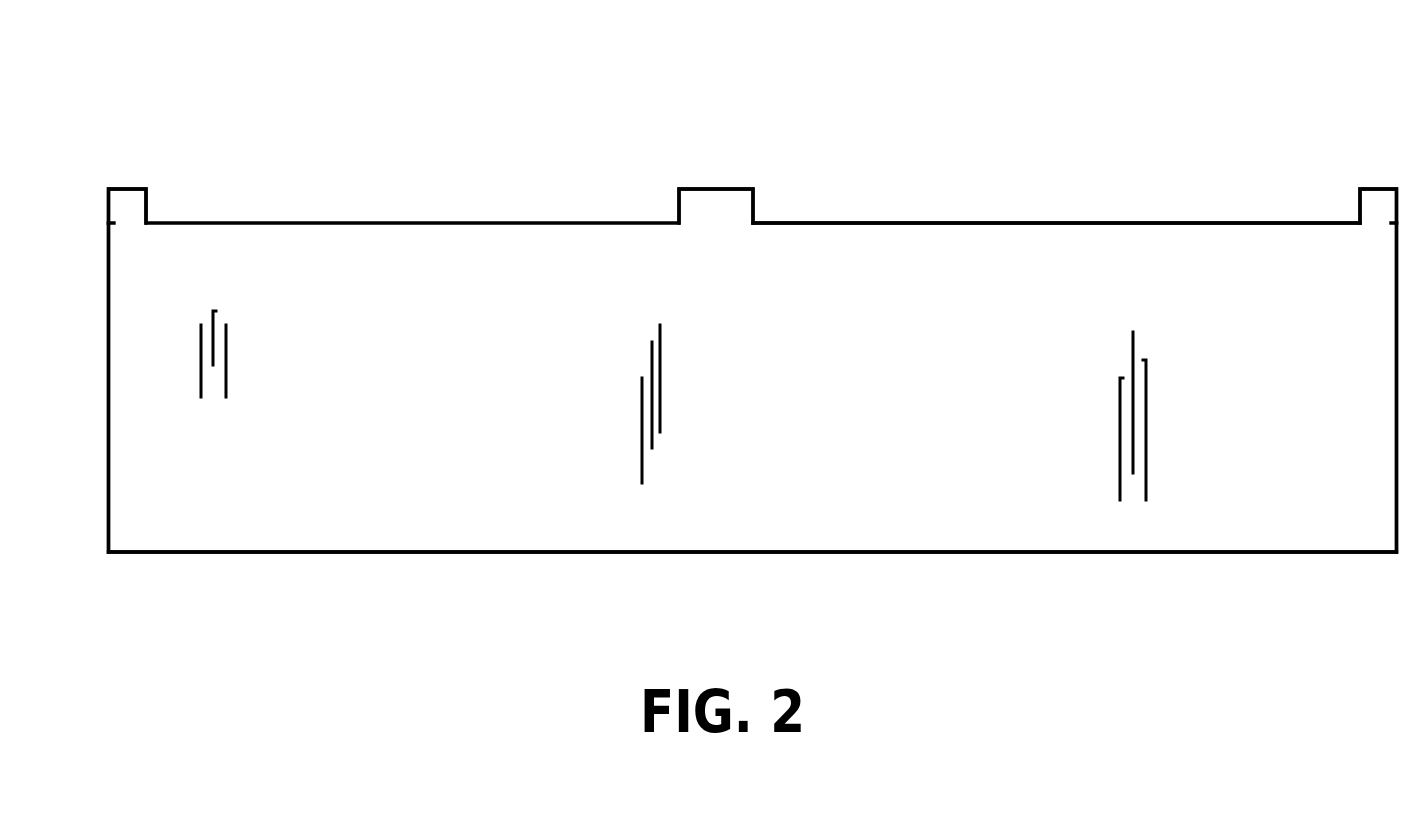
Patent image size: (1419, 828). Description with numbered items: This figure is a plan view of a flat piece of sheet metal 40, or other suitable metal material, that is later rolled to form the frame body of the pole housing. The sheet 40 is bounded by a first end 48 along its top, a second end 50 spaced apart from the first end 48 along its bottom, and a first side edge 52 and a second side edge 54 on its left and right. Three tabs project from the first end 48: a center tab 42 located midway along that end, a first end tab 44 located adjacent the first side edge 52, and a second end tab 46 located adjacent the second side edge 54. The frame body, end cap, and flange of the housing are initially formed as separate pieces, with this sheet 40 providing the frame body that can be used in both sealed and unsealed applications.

The sheet of metal 40 is at (889, 358).
The center tab 42 is at (709, 208).
The first end tab 44 is at (132, 207).
The second end tab 46 is at (1374, 207).
The first end 48 is at (1064, 221).
The second end 50 is at (975, 553).
The first side edge 52 is at (109, 415).
The second side edge 54 is at (1396, 415).